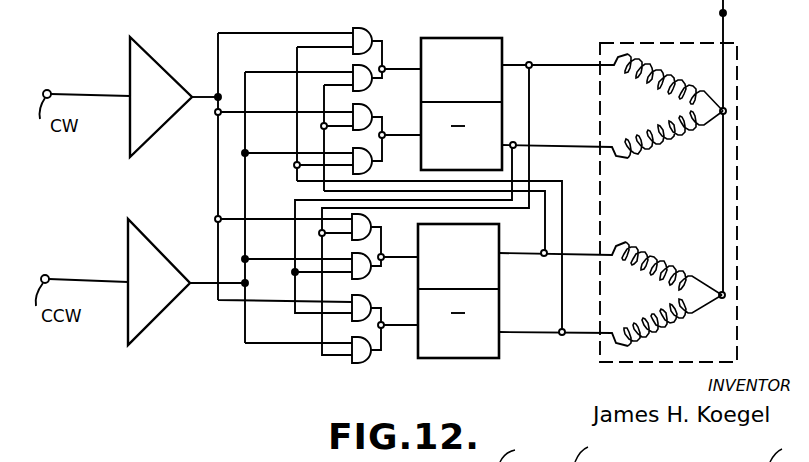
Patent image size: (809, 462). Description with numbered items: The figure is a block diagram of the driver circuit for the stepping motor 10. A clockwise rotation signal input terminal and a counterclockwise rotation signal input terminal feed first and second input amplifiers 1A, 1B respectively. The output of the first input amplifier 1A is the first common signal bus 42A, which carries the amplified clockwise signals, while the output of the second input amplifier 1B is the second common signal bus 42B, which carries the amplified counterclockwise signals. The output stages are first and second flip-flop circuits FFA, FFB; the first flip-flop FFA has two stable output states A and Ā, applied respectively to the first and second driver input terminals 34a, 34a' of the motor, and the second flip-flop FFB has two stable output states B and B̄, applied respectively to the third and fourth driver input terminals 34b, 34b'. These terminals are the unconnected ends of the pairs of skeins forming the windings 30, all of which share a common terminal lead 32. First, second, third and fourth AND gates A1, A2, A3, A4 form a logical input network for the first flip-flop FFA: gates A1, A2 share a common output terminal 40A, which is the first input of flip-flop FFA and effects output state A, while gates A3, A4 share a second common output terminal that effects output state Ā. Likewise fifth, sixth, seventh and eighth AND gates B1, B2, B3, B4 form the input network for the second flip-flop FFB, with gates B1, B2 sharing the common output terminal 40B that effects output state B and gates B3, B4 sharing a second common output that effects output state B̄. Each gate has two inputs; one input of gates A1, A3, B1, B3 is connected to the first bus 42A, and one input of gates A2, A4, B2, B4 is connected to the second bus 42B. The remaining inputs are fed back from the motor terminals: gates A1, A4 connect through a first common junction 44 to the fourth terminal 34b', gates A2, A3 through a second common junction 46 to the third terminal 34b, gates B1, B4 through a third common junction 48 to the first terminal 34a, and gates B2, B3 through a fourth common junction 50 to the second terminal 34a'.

The first input amplifier 1A is at (146, 49).
The second input amplifier 1B is at (151, 322).
The first common signal bus 42A is at (218, 146).
The second common signal bus 42B is at (245, 176).
The first common junction 44 is at (295, 167).
The second common junction 46 is at (321, 127).
The third common junction 48 is at (320, 233).
The fourth common junction 50 is at (294, 274).
The first AND gate A1 is at (354, 31).
The second AND gate A2 is at (356, 70).
The third AND gate A3 is at (357, 108).
The fourth AND gate A4 is at (357, 149).
The fifth AND gate B1 is at (360, 215).
The sixth AND gate B2 is at (357, 256).
The seventh AND gate B3 is at (358, 297).
The eighth AND gate B4 is at (358, 339).
The common output terminal of first and second AND gates 40A is at (384, 71).
The common output terminal of fifth and sixth AND gates 40B is at (381, 255).
The first flip-flop circuit FFA is at (472, 38).
The second flip-flop circuit FFB is at (459, 358).
The first driver input terminal 34a is at (565, 54).
The second driver input terminal 34a' is at (565, 136).
The third driver input terminal 34b is at (562, 264).
The fourth driver input terminal 34b' is at (563, 350).
The windings 30 is at (659, 61).
The common terminal lead 32 is at (725, 12).
The stepping motor 10 is at (739, 145).